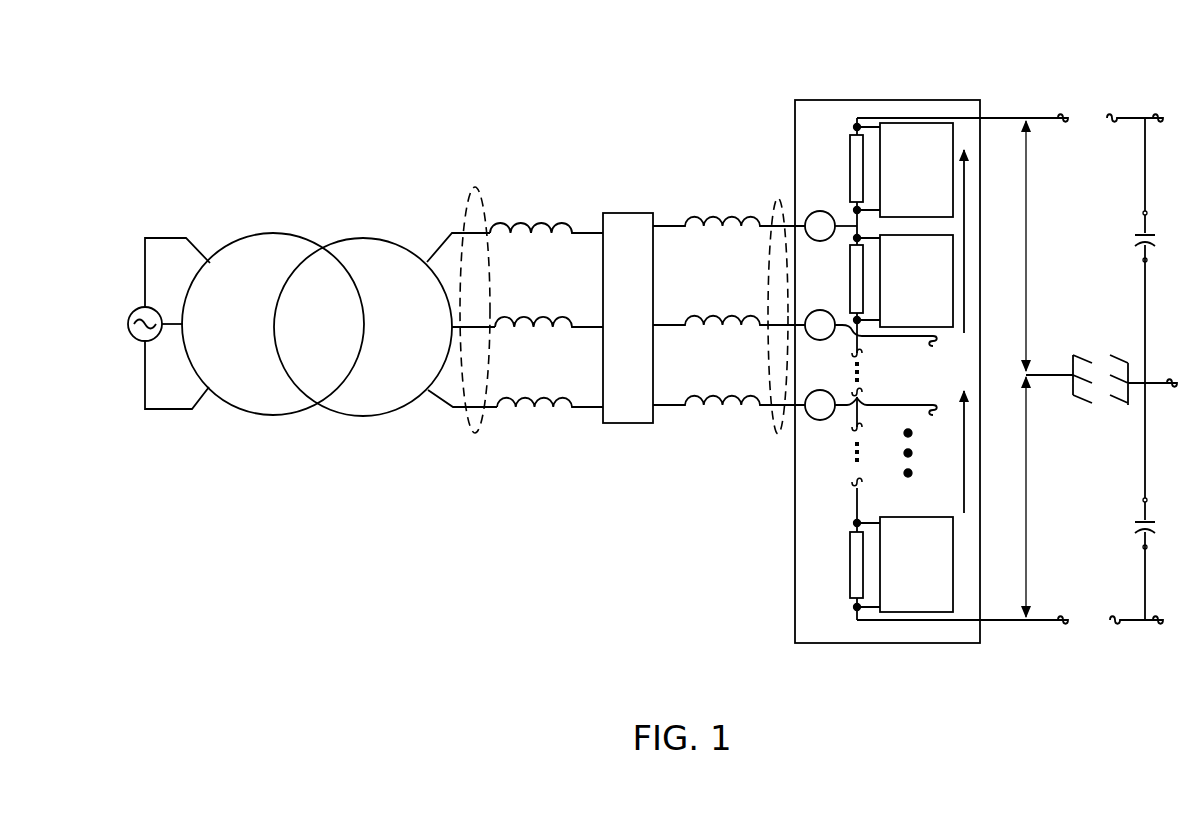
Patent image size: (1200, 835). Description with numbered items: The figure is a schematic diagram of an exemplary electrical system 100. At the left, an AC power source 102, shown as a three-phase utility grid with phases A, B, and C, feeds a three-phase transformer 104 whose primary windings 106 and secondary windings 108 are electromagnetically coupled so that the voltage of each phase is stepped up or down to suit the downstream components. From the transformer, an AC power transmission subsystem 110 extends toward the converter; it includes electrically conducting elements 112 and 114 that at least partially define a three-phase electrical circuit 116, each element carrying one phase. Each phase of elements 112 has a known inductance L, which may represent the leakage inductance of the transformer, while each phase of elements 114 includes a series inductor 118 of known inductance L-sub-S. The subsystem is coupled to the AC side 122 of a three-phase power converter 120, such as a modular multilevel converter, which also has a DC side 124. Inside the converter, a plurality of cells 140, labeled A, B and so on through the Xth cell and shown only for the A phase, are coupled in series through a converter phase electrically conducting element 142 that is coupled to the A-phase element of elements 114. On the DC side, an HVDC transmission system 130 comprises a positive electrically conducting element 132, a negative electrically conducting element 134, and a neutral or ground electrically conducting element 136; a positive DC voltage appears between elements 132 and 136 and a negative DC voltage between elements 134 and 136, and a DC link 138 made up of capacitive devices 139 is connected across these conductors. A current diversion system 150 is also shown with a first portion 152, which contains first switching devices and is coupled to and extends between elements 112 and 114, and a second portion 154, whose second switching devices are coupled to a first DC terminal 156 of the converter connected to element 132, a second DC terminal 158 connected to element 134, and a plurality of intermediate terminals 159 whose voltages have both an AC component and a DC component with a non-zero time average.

The electrical system 100 is at (255, 123).
The AC power source 102 is at (130, 310).
The three-phase transformer 104 is at (358, 225).
The primary windings 106 is at (273, 415).
The secondary windings 108 is at (365, 417).
The AC power transmission subsystem 110 is at (623, 133).
The electrically conducting elements 112 is at (476, 188).
The electrically conducting elements 114 is at (776, 198).
The three-phase electrical circuit 116 is at (442, 453).
The series inductor 118 is at (715, 228).
The three-phase power converter 120 is at (868, 52).
The AC side 122 is at (833, 90).
The DC side 124 is at (978, 98).
The HVDC transmission system 130 is at (1078, 58).
The positive electrically conducting element 132 is at (1014, 117).
The negative electrically conducting element 134 is at (1053, 622).
The neutral or ground electrically conducting element 136 is at (1043, 375).
The DC link 138 is at (1150, 114).
The capacitive devices 139 is at (1135, 235).
The cells 140 is at (899, 197).
The converter phase electrically conducting element 142 is at (855, 490).
The current diversion system 150 is at (628, 197).
The first portion 152 is at (647, 326).
The second portion 154 is at (830, 157).
The first DC terminal 156 is at (855, 126).
The second DC terminal 158 is at (855, 613).
The intermediate terminals 159 is at (856, 209).